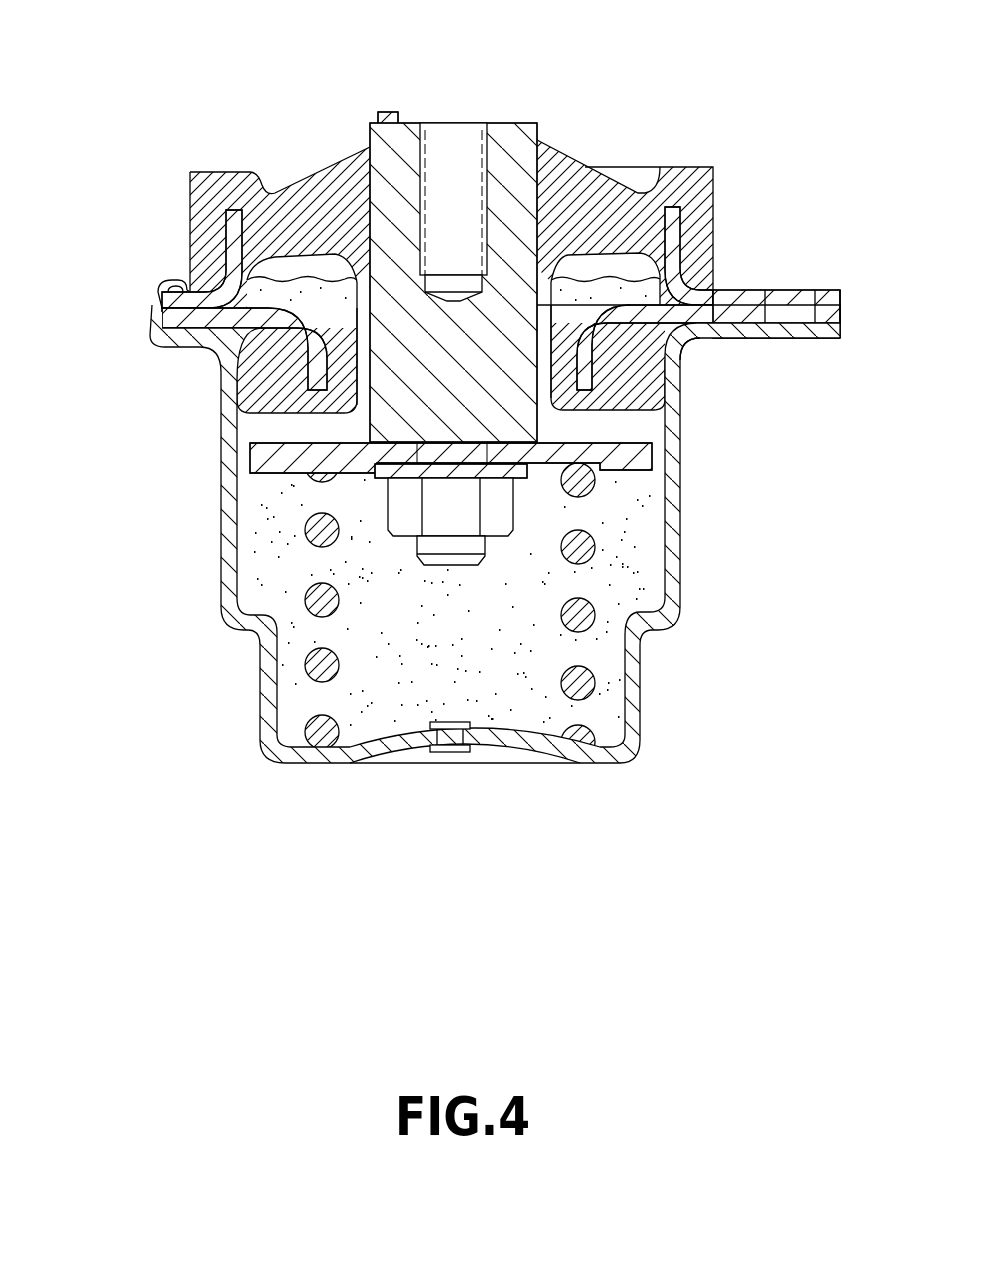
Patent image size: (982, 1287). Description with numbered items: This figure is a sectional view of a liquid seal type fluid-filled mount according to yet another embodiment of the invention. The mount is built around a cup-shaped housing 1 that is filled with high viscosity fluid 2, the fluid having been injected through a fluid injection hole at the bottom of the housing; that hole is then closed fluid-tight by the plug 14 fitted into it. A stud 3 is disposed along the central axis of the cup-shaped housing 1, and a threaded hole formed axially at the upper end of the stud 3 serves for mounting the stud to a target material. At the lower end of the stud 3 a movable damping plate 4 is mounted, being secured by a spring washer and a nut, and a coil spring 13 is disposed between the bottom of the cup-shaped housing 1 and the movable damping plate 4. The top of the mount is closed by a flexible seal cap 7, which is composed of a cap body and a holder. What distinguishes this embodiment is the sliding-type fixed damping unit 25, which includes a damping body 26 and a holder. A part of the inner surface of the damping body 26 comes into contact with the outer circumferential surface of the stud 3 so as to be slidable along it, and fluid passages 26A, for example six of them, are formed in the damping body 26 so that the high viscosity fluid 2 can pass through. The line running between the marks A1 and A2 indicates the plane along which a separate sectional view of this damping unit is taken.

The cup-shaped housing 1 is at (672, 518).
The high viscosity fluid 2 is at (636, 594).
The stud 3 is at (510, 145).
The movable damping plate 4 is at (262, 460).
The flexible seal cap 7 is at (600, 192).
The coil spring 13 is at (310, 662).
The plug 14 is at (448, 754).
The sliding-type fixed damping unit 25 is at (696, 399).
The damping body 26 is at (645, 268).
The fluid passages 26A is at (358, 318).
The section line A1-A2 (end point A1) A1 is at (183, 375).
The section line A1-A2 (end point A2) A2 is at (720, 370).